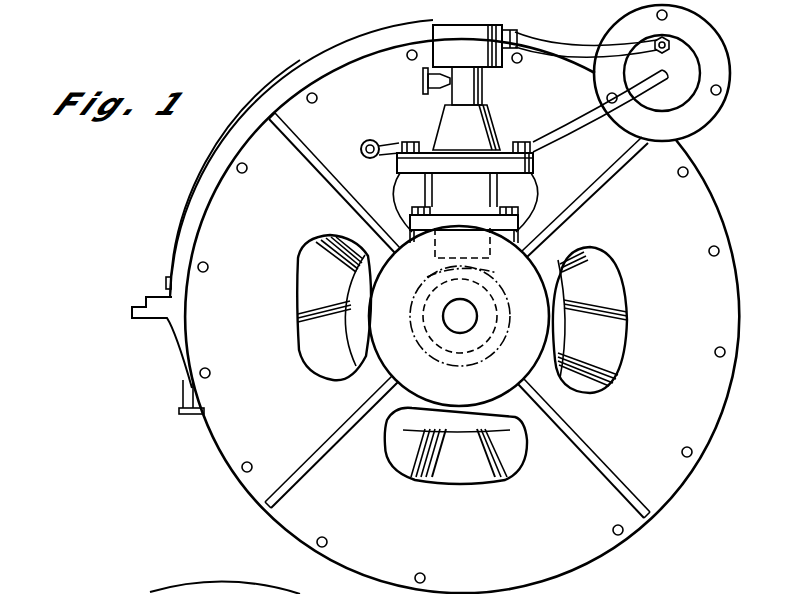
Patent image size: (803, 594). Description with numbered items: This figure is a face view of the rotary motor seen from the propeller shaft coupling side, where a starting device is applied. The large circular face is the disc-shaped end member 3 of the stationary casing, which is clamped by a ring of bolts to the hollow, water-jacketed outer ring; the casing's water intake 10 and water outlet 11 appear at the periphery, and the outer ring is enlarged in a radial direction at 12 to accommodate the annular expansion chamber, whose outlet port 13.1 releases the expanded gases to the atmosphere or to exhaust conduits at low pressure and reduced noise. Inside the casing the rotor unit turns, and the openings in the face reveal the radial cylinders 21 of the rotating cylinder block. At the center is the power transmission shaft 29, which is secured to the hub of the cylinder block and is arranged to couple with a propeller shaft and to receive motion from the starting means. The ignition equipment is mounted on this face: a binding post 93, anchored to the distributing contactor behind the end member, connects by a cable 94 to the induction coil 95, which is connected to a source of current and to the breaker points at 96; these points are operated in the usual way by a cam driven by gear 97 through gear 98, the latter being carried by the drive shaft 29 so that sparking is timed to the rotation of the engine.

The disc-shaped end member 3 is at (597, 559).
The water intake 10 is at (392, 20).
The water outlet 11 is at (166, 282).
The radial enlargement of ring section 12 is at (208, 165).
The outlet port of the expansion chamber 13.1 is at (196, 414).
The radial cylinder 21 is at (588, 312).
The power transmission shaft 29 is at (477, 316).
The binding post 93 is at (370, 161).
The cable 94 is at (546, 140).
The induction coil 95 is at (631, 60).
The breaker points 96 is at (530, 35).
The gear 97 is at (430, 268).
The gear 98 is at (507, 342).